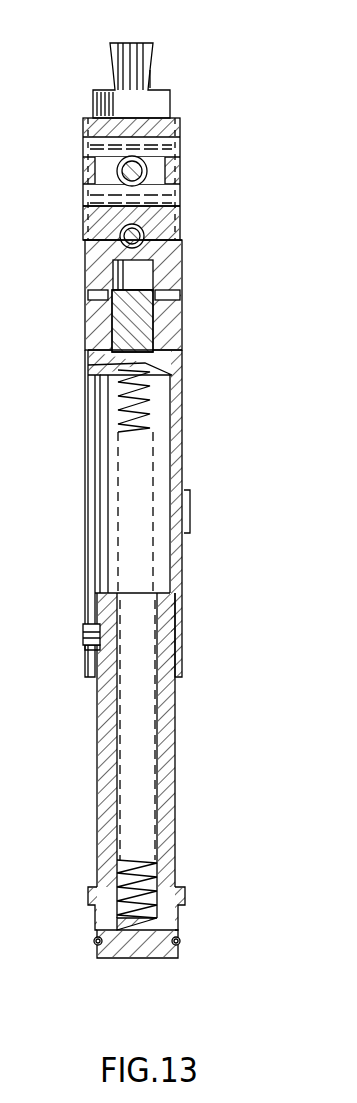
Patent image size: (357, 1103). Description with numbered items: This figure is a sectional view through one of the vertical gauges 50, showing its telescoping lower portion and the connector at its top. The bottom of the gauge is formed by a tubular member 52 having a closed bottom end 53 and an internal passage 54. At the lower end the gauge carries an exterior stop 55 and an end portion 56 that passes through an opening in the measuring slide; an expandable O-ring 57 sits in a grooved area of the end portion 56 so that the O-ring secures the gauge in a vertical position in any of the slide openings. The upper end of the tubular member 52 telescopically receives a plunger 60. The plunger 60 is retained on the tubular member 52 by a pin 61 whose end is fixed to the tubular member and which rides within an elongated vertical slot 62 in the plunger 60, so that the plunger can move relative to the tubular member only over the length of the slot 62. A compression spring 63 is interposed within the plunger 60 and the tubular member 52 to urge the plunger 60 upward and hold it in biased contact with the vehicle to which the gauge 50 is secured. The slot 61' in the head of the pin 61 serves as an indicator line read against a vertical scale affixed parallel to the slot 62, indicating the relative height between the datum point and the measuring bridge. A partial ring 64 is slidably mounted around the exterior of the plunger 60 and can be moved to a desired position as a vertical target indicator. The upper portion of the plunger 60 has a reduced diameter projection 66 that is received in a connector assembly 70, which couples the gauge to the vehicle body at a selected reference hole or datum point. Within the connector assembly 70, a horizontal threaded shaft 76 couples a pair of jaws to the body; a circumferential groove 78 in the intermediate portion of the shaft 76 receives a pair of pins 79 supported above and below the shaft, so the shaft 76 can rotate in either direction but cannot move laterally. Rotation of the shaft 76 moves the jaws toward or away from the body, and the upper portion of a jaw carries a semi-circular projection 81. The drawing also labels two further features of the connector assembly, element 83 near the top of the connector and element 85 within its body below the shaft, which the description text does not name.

The vertical gauge 50 is at (92, 522).
The tubular member 52 is at (104, 740).
The closed bottom end 53 is at (143, 958).
The internal passage 54 is at (148, 775).
The exterior stop 55 is at (187, 895).
The end portion 56 is at (178, 920).
The O-ring 57 is at (182, 943).
The plunger 60 is at (178, 458).
The pin 61 is at (56, 677).
The slot of the head of pin 61' is at (51, 646).
The elongated vertical slot 62 is at (93, 476).
The compression spring 63 is at (145, 535).
The partial ring 64 is at (190, 500).
The reduced diameter projection 66 is at (142, 310).
The connector assembly 70 is at (95, 172).
The horizontal threaded shaft 76 is at (160, 172).
The circumferential groove 78 is at (179, 148).
The pins 79 is at (85, 206).
The semi-circular projection 81 is at (113, 50).
The stem shoulder 83 is at (146, 50).
The plunger seat 85 is at (168, 250).